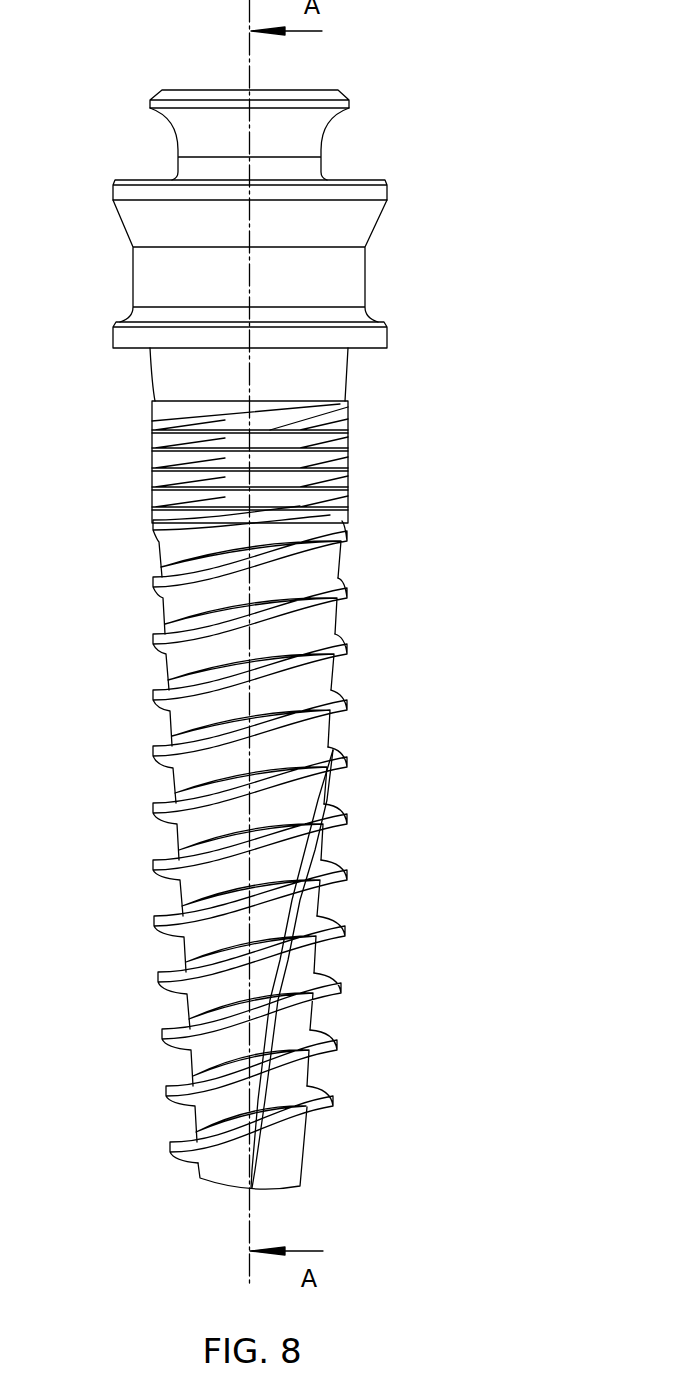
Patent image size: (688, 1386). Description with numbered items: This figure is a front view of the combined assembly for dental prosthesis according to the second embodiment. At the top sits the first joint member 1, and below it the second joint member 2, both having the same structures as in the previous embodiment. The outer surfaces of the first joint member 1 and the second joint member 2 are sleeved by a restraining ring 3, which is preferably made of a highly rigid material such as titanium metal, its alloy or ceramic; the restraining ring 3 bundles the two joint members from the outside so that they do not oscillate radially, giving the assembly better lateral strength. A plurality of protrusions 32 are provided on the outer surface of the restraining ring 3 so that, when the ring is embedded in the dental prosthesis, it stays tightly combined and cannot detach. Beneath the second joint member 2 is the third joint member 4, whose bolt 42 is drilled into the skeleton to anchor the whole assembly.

The first joint member 1 is at (367, 90).
The restraining ring 3 is at (412, 173).
The protrusions 32 is at (380, 333).
The second joint member 2 is at (367, 385).
The third joint member 4 is at (257, 826).
The bolt 42 is at (155, 578).